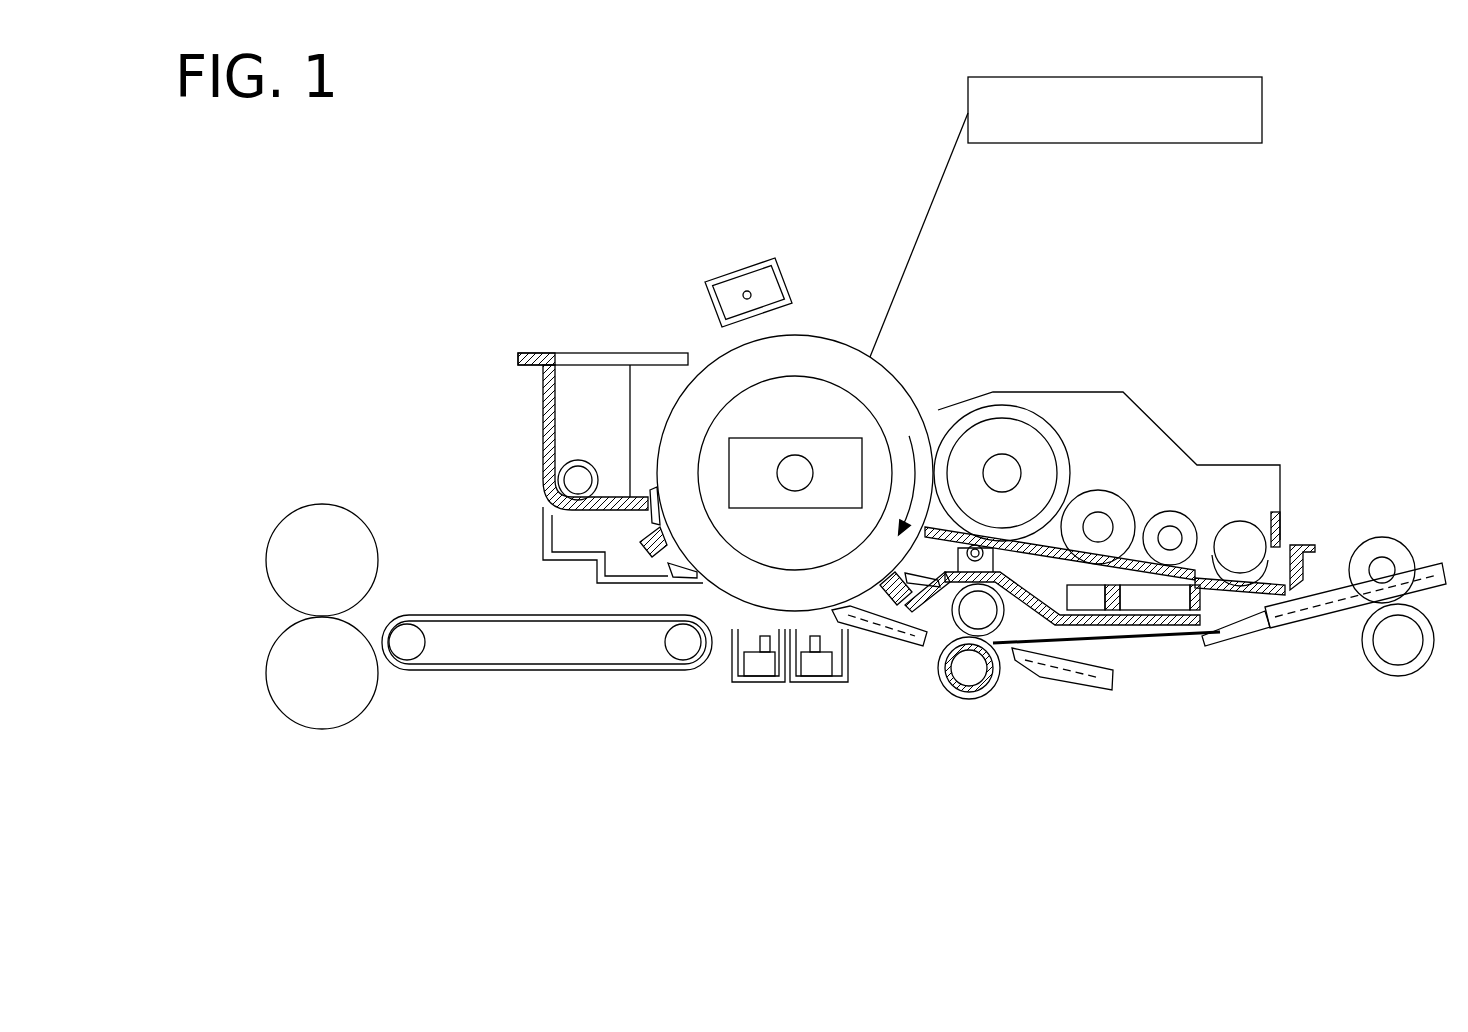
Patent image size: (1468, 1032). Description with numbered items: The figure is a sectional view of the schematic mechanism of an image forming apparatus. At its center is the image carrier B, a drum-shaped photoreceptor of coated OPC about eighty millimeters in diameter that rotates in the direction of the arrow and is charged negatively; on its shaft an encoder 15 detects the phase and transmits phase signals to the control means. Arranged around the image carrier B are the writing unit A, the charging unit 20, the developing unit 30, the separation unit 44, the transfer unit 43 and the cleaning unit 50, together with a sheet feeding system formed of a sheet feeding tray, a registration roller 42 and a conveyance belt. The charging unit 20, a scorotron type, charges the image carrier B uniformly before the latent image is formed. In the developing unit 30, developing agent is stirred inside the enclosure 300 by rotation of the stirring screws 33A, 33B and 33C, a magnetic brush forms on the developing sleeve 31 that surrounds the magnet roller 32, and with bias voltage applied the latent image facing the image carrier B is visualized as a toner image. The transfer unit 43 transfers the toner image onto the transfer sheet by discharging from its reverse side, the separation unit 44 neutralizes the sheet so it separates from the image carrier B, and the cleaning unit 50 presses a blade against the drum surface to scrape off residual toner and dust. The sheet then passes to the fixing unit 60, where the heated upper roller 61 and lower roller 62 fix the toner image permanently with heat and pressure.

The writing unit A is at (1262, 110).
The image carrier B is at (897, 377).
The encoder 15 is at (795, 454).
The charging unit 20 is at (740, 262).
The developing unit 30 is at (1258, 465).
The enclosure 300 is at (992, 392).
The developing sleeve 31 is at (1055, 438).
The magnet roller 32 is at (1025, 428).
The stirring screw 33A is at (1115, 495).
The stirring screw 33B is at (1185, 500).
The stirring screw 33C is at (1240, 521).
The registration roller 42 is at (968, 700).
The transfer unit 43 is at (818, 686).
The separation unit 44 is at (760, 686).
The cleaning unit 50 is at (582, 352).
The fixing unit 60 is at (370, 581).
The upper roller 61 is at (380, 552).
The lower roller 62 is at (372, 712).